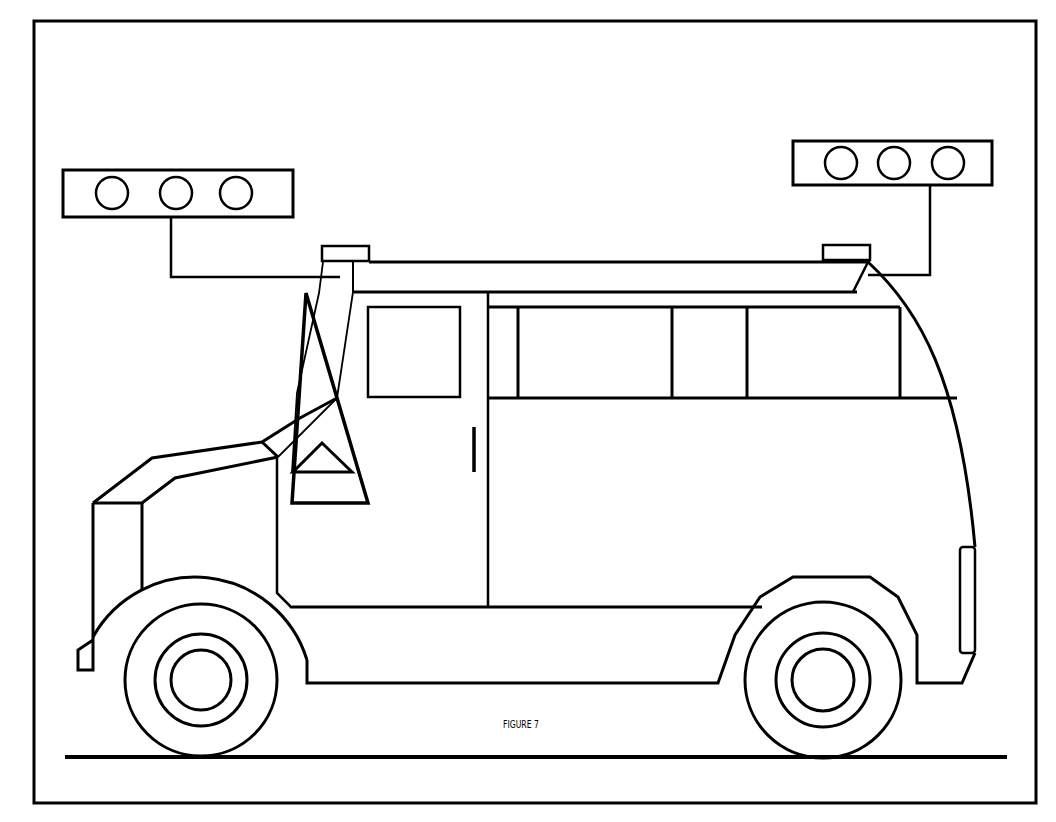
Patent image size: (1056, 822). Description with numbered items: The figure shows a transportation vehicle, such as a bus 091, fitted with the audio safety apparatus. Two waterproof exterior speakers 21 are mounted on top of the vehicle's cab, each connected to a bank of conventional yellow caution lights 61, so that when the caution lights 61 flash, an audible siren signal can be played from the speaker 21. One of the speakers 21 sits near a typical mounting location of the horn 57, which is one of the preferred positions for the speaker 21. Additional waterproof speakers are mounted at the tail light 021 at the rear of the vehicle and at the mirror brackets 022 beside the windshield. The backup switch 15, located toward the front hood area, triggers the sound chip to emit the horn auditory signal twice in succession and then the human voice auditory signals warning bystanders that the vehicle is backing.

The yellow caution lights 61 is at (265, 171).
The waterproof exterior speaker 21 is at (345, 245).
The cars and buses 091 is at (549, 262).
The horn 57 is at (872, 252).
The tail light 021 is at (958, 560).
The backup switch 15 is at (275, 428).
The mirror brackets 022 is at (322, 458).